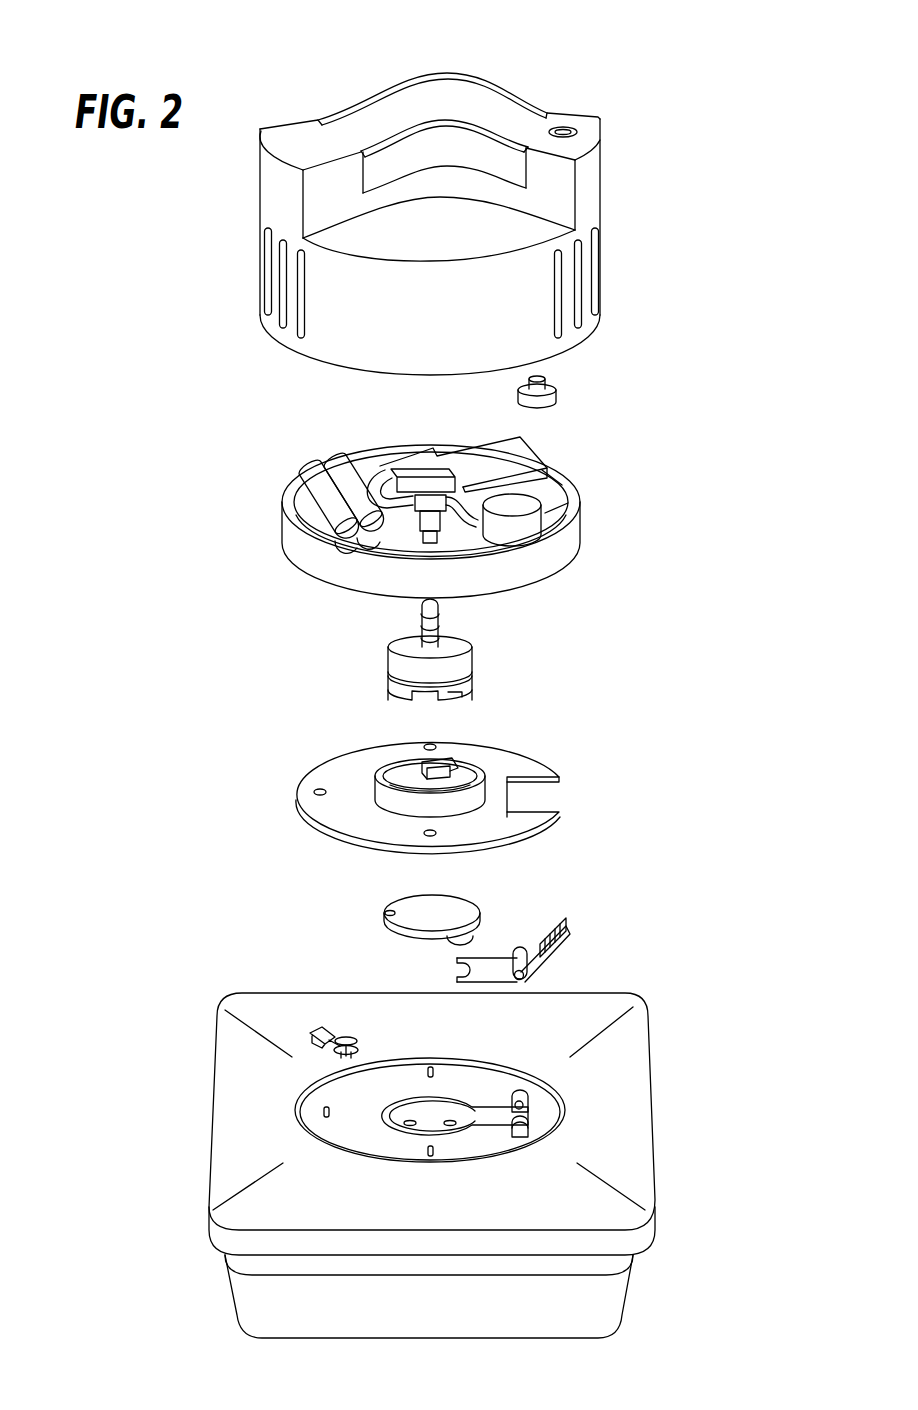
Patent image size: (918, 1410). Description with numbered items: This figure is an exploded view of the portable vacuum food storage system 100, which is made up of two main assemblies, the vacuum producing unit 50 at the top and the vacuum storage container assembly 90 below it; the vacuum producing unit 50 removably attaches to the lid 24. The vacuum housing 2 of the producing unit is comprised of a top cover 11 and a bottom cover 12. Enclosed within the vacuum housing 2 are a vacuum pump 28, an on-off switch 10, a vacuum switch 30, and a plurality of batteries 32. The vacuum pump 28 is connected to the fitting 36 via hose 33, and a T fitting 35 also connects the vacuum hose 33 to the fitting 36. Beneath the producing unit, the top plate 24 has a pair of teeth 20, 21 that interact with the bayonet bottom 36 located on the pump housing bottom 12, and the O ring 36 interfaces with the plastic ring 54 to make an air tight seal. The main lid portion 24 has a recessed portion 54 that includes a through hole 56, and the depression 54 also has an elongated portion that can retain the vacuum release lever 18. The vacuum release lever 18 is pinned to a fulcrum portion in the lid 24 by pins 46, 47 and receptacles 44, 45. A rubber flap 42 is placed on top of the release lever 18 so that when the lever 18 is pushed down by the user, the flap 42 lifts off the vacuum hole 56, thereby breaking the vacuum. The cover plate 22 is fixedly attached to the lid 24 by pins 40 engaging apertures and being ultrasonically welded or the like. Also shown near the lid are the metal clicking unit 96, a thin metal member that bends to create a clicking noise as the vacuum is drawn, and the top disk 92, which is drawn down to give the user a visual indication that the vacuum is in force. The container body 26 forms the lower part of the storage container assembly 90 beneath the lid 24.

The portable vacuum food storage system 100 is at (135, 268).
The vacuum housing 2 is at (320, 308).
The top cover 11 is at (565, 127).
The on-off switch 10 is at (560, 393).
The bottom cover 12 is at (523, 573).
The batteries 32 is at (317, 480).
The hose 33 is at (375, 478).
The fitting 36 is at (427, 497).
The vacuum pump 28 is at (515, 453).
The vacuum switch 30 is at (525, 504).
The cover plate 22 is at (527, 762).
The T fitting 35 is at (320, 790).
The recessed portion 54 is at (395, 780).
The tooth 21 is at (405, 787).
The tooth 20 is at (440, 767).
The rubber flap 42 is at (412, 908).
The vacuum release lever 18 is at (541, 958).
The receptacle 44 is at (520, 982).
The receptacle 45 is at (513, 947).
The lid 24 is at (597, 1000).
The pins 40 is at (325, 1108).
The through hole 56 is at (447, 1122).
The pin 46 is at (523, 1096).
The pin 47 is at (530, 1118).
The metal clicking unit 96 is at (329, 1033).
The top disk 92 is at (349, 1038).
The box 26 is at (244, 1310).
The vacuum producing unit 50 is at (675, 98).
The vacuum storage container assembly 90 is at (675, 727).